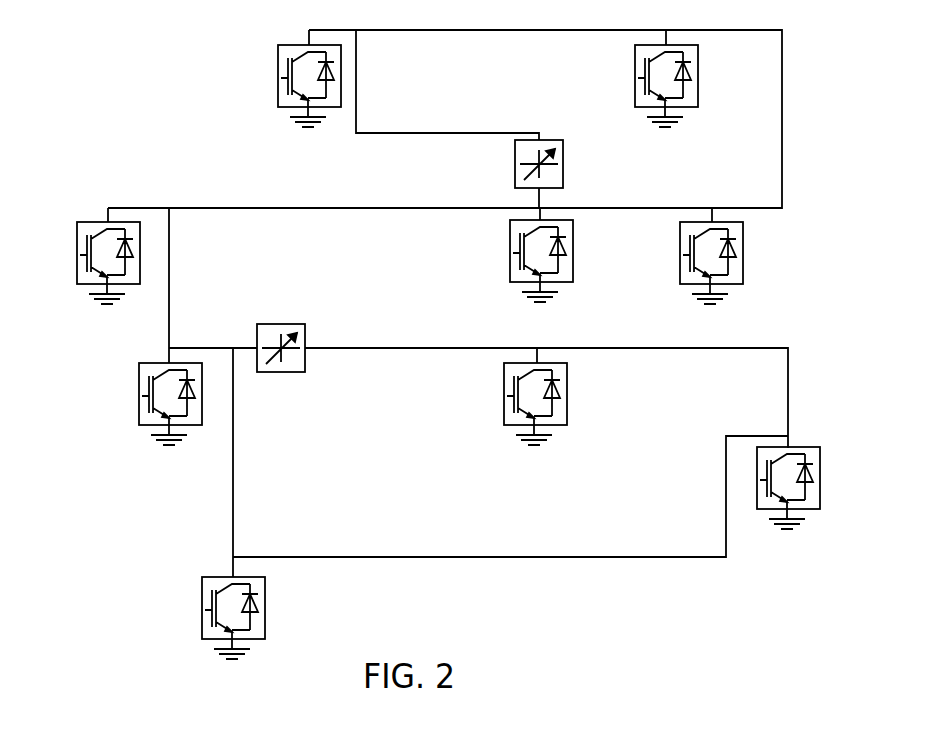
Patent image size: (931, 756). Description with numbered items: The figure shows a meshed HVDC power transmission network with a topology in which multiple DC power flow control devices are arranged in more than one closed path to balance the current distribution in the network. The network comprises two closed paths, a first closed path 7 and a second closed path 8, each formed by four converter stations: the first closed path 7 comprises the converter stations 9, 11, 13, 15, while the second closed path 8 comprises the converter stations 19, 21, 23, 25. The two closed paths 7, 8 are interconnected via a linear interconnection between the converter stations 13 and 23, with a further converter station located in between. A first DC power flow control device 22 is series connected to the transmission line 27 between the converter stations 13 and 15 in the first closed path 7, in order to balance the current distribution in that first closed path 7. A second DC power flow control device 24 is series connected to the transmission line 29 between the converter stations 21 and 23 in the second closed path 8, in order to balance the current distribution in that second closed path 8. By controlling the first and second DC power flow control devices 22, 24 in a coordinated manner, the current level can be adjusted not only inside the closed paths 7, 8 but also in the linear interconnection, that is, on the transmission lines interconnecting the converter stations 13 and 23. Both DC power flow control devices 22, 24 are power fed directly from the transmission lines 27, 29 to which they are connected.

The first closed path 7 is at (672, 412).
The second closed path 8 is at (728, 125).
The converter station 9 is at (202, 630).
The converter station 11 is at (810, 509).
The converter station 13 is at (145, 425).
The converter station 15 is at (510, 425).
The converter station 19 is at (686, 107).
The converter station 21 is at (280, 106).
The first DC power flow control device 22 is at (279, 372).
The converter station 23 is at (514, 282).
The second DC power flow control device 24 is at (563, 164).
The converter station 25 is at (743, 262).
The transmission line 27 is at (400, 348).
The transmission line 29 is at (405, 133).